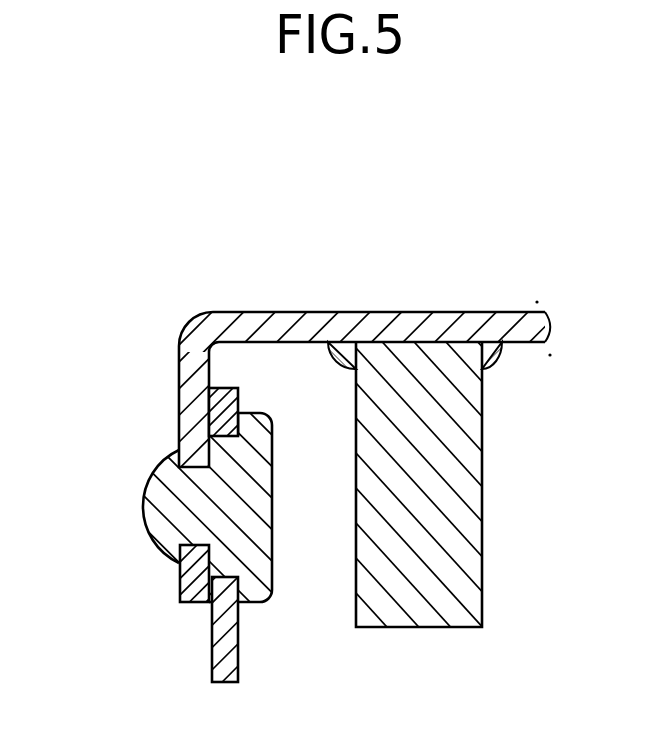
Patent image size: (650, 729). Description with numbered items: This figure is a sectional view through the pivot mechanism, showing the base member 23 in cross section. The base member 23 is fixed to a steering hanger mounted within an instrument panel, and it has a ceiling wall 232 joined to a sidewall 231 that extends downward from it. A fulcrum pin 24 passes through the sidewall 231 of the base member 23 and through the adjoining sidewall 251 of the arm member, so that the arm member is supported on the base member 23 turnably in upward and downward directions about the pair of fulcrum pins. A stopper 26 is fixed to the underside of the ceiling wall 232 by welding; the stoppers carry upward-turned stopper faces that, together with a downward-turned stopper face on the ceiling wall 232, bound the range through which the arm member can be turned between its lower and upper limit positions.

The base member 23 is at (353, 285).
The sidewall of the base member 231 is at (189, 403).
The ceiling wall of the base member 232 is at (475, 323).
The fulcrum pin 24 is at (167, 523).
The sidewall of the arm member 251 is at (227, 630).
The stopper 26 is at (463, 490).